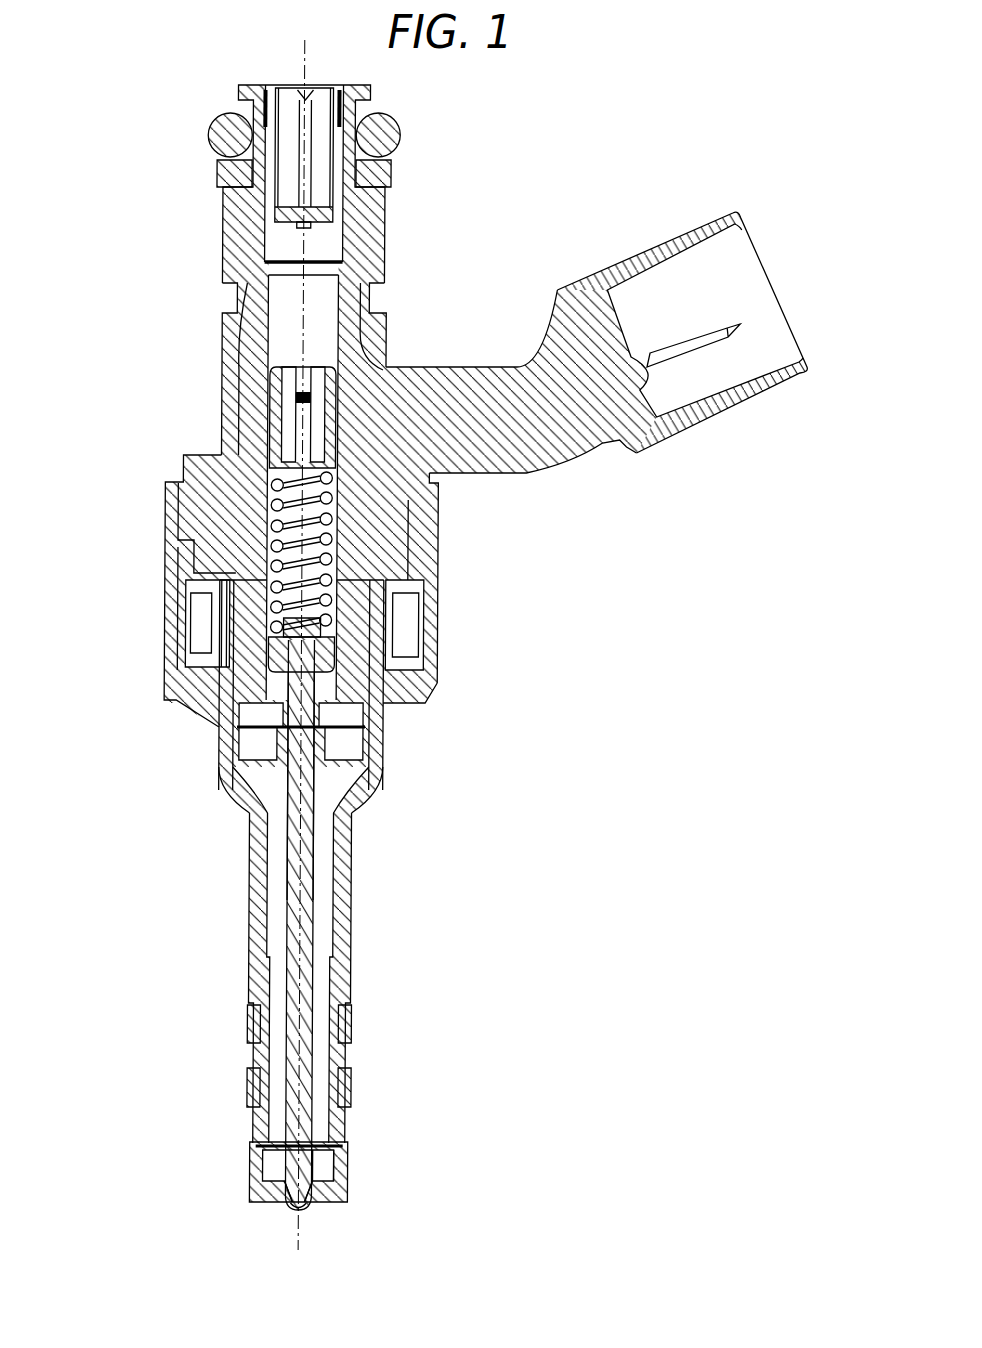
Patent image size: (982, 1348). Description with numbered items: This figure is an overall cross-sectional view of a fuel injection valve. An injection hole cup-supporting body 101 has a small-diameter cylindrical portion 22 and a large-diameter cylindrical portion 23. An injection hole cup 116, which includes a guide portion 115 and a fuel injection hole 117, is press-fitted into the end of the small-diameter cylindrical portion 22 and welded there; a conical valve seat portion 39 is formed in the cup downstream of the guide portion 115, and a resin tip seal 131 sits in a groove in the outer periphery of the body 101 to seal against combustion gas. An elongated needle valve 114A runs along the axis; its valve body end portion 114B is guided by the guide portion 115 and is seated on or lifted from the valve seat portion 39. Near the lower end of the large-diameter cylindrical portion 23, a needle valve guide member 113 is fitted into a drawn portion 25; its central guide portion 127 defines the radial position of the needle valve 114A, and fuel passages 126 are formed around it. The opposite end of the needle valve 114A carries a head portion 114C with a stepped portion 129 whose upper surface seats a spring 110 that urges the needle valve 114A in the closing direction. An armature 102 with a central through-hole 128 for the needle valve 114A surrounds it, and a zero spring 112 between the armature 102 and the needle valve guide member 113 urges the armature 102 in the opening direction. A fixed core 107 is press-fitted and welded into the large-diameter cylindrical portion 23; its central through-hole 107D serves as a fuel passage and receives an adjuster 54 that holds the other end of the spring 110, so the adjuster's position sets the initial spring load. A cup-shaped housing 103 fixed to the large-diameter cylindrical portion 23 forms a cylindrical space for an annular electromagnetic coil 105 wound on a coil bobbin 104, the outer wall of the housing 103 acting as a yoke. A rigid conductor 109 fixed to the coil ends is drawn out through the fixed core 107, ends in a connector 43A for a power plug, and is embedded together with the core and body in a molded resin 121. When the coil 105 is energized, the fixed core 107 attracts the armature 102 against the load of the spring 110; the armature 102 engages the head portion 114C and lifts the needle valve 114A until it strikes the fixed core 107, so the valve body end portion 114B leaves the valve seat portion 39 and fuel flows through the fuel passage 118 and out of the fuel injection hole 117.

The connector 43A is at (712, 222).
The molded resin 121 is at (472, 410).
The conductor 109 is at (788, 333).
The through-hole 107D is at (295, 335).
The adjuster 54 is at (275, 422).
The spring 110 is at (181, 516).
The fixed core 107 is at (353, 640).
The head portion 114C is at (187, 615).
The electromagnetic coil 105 is at (405, 622).
The stepped portion 129 is at (297, 635).
The coil bobbin 104 is at (363, 688).
The housing 103 is at (190, 680).
The armature 102 is at (422, 708).
The through-hole 128 is at (262, 722).
The large-diameter cylindrical portion 23 is at (383, 727).
The needle valve guide member 113 is at (368, 753).
The zero spring 112 is at (252, 782).
The drawn portion 25 is at (245, 790).
The needle valve 114A is at (298, 868).
The fuel passage 118 is at (280, 915).
The injection hole cup-supporting body 101 is at (353, 803).
The fuel passages 126 is at (373, 760).
The guide portion 127 is at (343, 818).
The small-diameter cylindrical portion 22 is at (348, 907).
The tip seal 131 is at (353, 1085).
The valve body end portion 114B is at (258, 1185).
The guide portion 115 is at (335, 1183).
The valve seat portion 39 is at (287, 1207).
The injection hole cup 116 is at (312, 1208).
The fuel injection hole 117 is at (305, 1208).